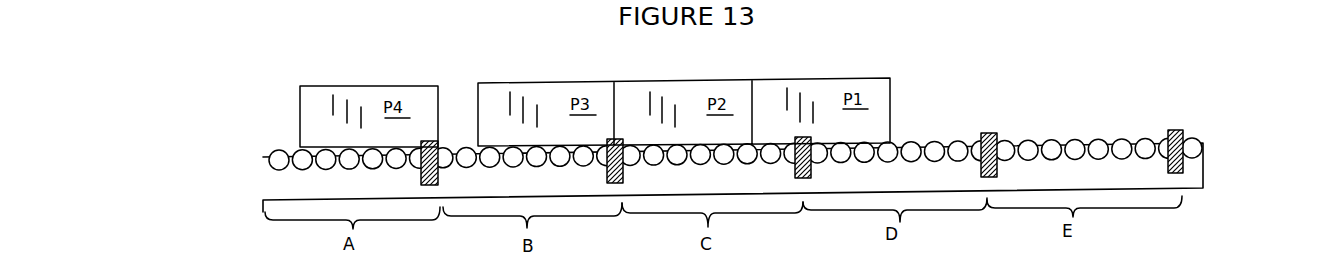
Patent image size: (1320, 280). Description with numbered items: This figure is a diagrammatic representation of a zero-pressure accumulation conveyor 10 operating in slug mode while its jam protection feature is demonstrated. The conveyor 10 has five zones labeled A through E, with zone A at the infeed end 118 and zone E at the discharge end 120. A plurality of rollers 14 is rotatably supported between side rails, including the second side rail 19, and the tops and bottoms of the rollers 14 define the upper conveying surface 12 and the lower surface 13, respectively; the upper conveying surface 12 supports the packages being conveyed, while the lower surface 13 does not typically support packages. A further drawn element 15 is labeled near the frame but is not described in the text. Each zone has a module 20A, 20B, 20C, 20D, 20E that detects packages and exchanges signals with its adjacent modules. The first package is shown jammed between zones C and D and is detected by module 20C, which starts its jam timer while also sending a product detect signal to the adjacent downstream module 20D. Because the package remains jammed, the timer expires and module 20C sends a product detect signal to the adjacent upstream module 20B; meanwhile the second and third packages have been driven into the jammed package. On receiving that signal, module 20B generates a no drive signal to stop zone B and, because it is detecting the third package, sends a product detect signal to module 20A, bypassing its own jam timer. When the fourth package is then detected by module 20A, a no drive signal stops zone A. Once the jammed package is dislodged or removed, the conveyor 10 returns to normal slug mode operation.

The zero-pressure accumulation conveyor 10 is at (1153, 60).
The upper conveying surface 12 is at (457, 138).
The lower surface 13 is at (465, 168).
The rollers 14 is at (268, 150).
The side frame 15 is at (275, 192).
The second side rail 19 is at (186, 20).
The infeed end 118 is at (236, 172).
The discharge end 120 is at (1222, 151).
The module 20A is at (420, 173).
The module 20B is at (606, 176).
The module 20C is at (794, 171).
The module 20D is at (979, 172).
The module 20E is at (1167, 168).